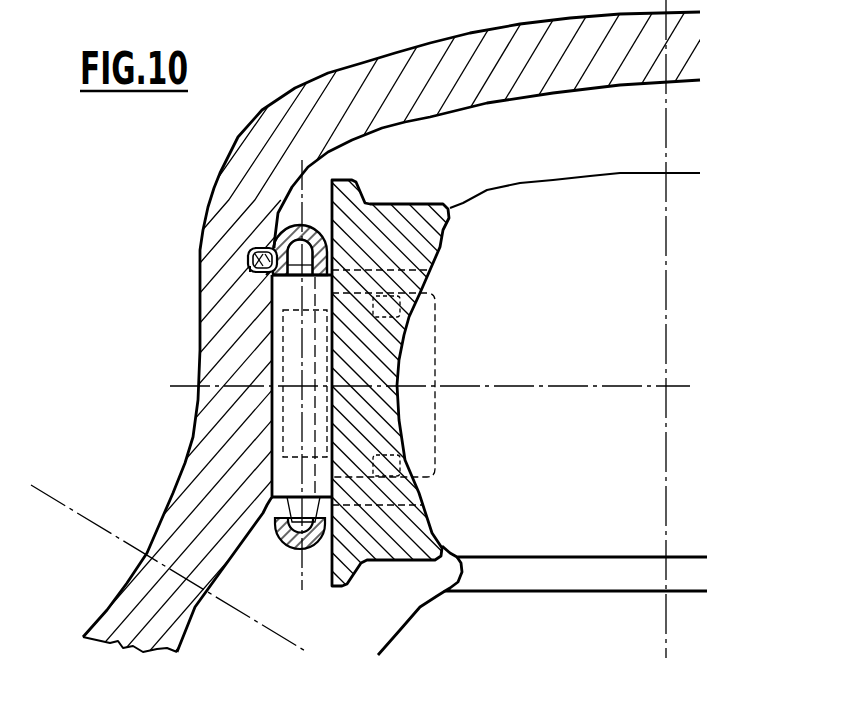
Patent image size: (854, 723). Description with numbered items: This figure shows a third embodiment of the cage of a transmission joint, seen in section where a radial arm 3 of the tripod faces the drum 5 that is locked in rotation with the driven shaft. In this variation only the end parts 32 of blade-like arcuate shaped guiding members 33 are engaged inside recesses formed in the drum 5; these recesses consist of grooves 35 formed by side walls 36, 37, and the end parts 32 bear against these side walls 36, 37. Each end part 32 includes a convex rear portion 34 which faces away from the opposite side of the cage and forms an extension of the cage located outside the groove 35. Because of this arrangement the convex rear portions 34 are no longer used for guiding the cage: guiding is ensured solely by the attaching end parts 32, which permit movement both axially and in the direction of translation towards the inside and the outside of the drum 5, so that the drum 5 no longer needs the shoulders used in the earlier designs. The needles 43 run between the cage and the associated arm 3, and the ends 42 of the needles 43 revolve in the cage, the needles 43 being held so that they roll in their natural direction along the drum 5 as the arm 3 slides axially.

The radial arm 3 is at (622, 195).
The drum 5 is at (402, 46).
The end part 32 is at (247, 257).
The guiding member 33 is at (291, 219).
The convex rear portion 34 is at (322, 233).
The groove 35 is at (250, 266).
The side wall 36 is at (265, 276).
The side wall 37 is at (273, 247).
The needle end 42 is at (313, 265).
The needle 43 is at (293, 355).